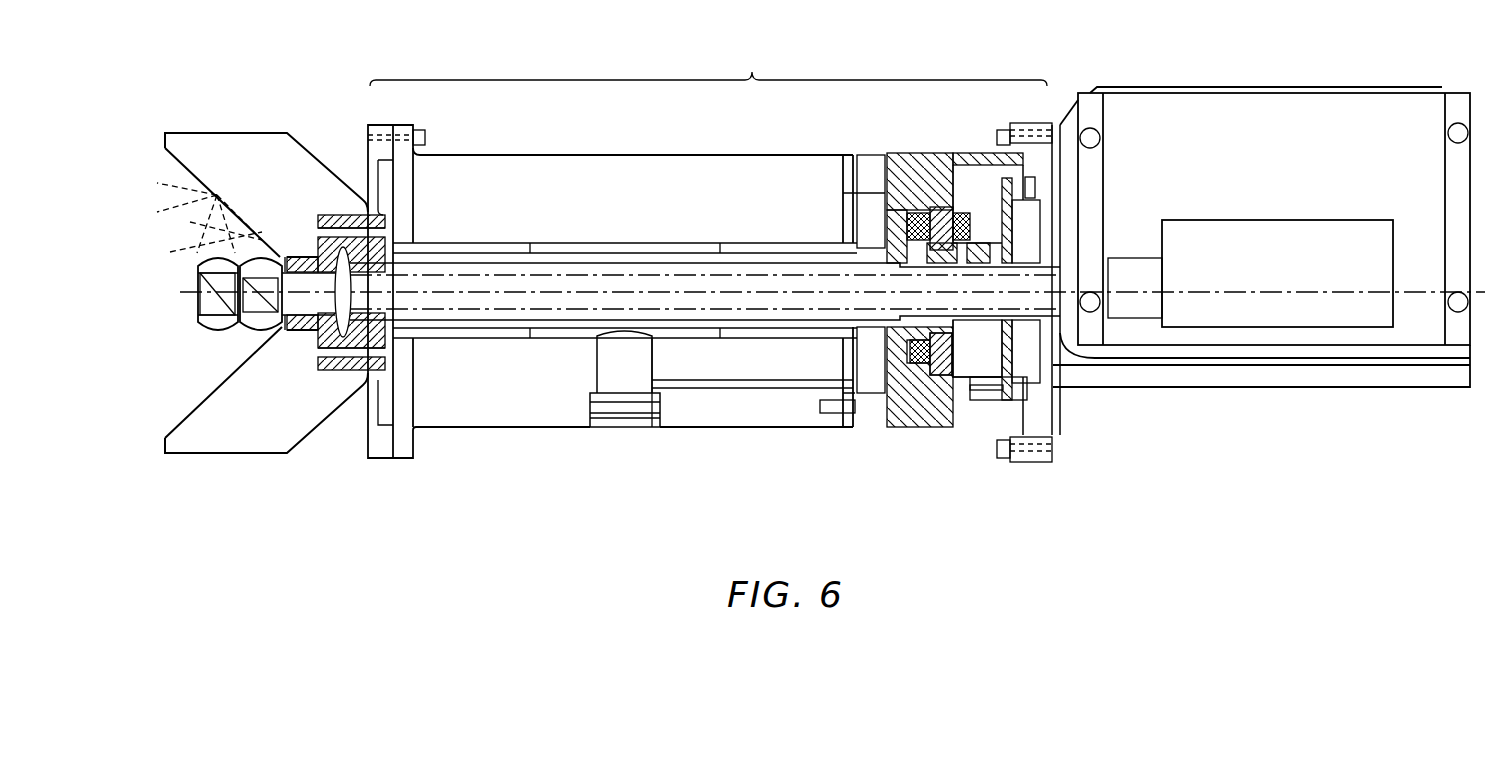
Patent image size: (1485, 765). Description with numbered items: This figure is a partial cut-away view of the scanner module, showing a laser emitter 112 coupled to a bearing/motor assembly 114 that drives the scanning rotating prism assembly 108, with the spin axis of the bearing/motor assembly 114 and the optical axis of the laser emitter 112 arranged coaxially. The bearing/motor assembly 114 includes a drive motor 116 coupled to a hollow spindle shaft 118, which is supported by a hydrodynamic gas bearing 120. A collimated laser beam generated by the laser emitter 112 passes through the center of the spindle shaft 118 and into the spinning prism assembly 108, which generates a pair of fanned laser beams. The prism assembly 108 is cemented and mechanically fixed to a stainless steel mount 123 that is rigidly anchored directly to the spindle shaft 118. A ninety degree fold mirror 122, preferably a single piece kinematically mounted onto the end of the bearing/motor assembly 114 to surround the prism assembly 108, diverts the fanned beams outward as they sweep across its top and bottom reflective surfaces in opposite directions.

The scanning rotating prism assembly 108 is at (198, 318).
The laser emitter 112 is at (1268, 330).
The bearing/motor assembly 114 is at (705, 248).
The drive motor 116 is at (916, 366).
The hollow spindle shaft 118 is at (541, 252).
The hydrodynamic gas bearing 120 is at (633, 343).
The 90 degree fold mirror 122 is at (240, 130).
The stainless steel mount 123 is at (335, 374).